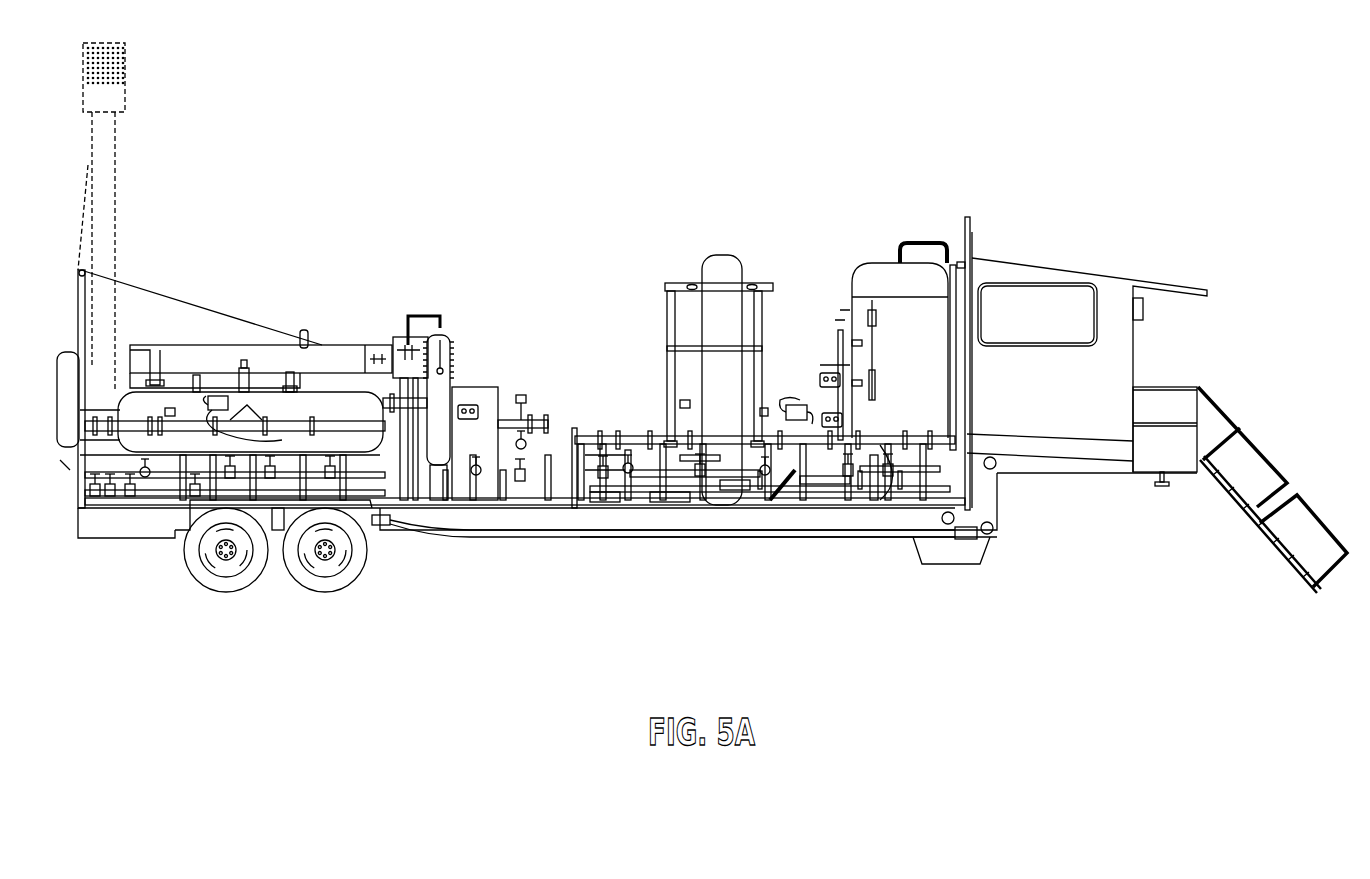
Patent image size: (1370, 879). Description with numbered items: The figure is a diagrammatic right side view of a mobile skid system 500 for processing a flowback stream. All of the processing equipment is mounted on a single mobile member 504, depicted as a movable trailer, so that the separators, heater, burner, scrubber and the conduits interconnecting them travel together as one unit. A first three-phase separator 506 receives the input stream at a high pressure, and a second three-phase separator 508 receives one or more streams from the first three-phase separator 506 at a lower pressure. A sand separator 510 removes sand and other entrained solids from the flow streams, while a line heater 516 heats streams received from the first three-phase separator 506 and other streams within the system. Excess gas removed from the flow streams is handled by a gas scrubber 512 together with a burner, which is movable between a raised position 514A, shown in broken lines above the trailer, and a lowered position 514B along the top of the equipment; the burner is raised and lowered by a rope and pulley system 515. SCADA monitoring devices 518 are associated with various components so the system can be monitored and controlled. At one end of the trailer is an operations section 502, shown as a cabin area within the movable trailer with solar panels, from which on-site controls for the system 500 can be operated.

The mobile skid system 500 is at (870, 62).
The operations section 502 is at (1040, 280).
The mobile member 504 is at (550, 518).
The first three-phase separator 506 is at (263, 398).
The second three-phase separator 508 is at (883, 272).
The sand separator 510 is at (722, 258).
The gas scrubber 512 is at (442, 338).
The raised position of burner 514A is at (118, 98).
The lowered position of burner 514B is at (342, 357).
The rope and pulley system 515 is at (153, 284).
The line heater 516 is at (482, 403).
The SCADA monitoring devices 518 is at (202, 400).